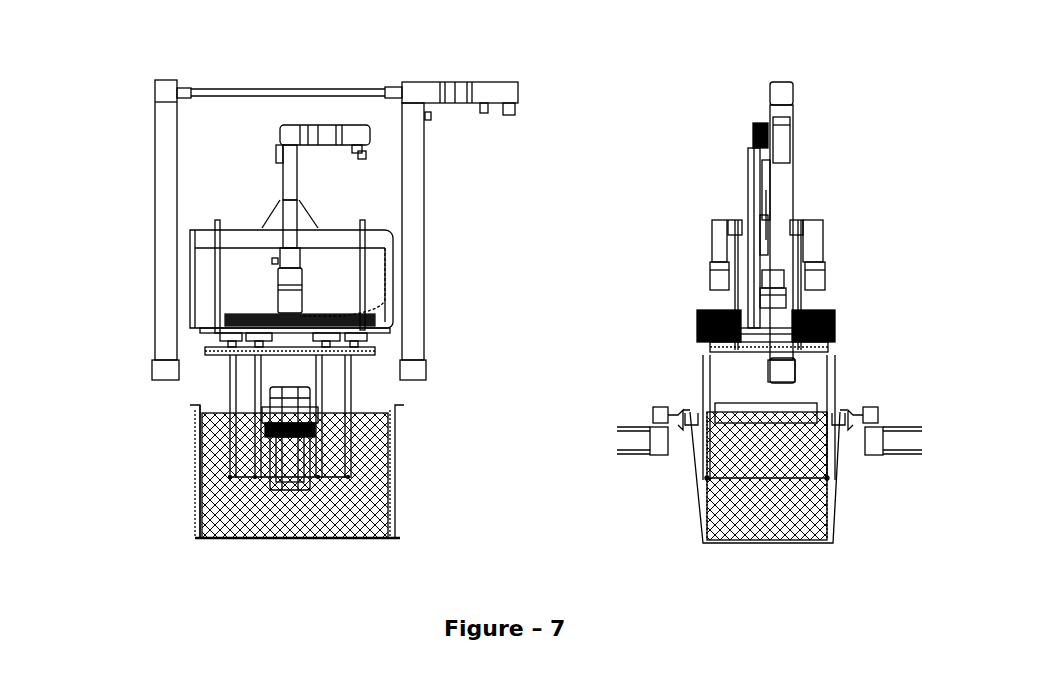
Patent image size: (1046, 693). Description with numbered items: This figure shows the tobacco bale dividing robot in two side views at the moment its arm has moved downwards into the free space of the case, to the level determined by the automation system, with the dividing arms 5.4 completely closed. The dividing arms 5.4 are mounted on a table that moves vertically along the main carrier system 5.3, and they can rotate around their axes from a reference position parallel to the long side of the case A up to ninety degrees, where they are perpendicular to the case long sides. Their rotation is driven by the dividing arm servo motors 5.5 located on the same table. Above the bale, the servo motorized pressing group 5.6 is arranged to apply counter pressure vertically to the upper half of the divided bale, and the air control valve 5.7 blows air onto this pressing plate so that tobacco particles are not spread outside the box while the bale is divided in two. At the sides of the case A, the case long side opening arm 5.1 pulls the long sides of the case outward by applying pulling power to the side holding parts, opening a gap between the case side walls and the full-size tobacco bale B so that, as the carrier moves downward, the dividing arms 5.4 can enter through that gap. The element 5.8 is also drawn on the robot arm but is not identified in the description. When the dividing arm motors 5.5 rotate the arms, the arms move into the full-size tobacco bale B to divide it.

The case long side opening arm 5.1 is at (830, 467).
The main carrier system 5.3 is at (180, 91).
The dividing arms 5.4 is at (283, 452).
The dividing arm servo motors 5.5 is at (262, 318).
The servo motorized pressing group 5.6 is at (752, 135).
The air control valve 5.7 is at (272, 278).
The robot arm 5.8 is at (277, 158).
The case A is at (398, 430).
The full-size tobacco bale B is at (368, 502).